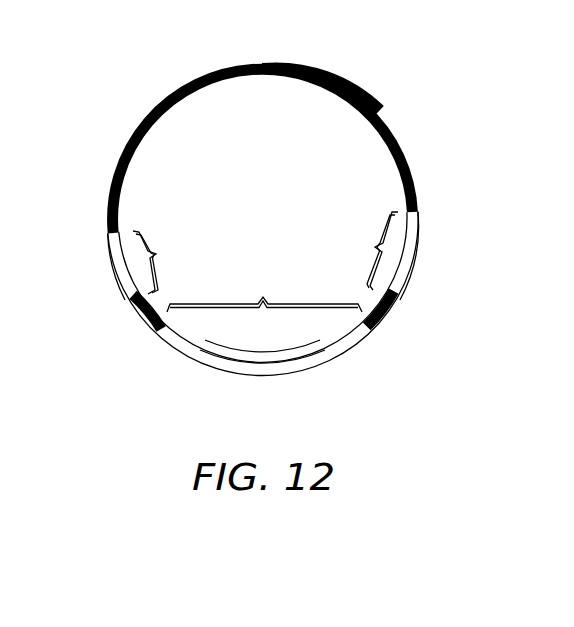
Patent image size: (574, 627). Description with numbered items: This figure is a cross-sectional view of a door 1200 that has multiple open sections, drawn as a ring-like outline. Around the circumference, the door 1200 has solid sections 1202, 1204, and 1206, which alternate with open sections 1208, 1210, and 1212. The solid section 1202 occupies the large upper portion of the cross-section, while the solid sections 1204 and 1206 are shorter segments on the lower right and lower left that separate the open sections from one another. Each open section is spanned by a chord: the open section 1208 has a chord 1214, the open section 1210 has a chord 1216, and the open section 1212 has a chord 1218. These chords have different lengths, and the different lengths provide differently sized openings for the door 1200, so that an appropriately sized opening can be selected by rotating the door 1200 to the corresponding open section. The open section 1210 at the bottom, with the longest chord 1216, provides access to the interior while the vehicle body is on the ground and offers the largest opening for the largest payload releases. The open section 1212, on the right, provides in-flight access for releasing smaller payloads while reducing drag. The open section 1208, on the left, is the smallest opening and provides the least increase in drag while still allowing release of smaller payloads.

The door 1200 is at (214, 72).
The solid section 1202 is at (373, 71).
The solid section 1204 is at (385, 317).
The solid section 1206 is at (142, 310).
The open section 1208 is at (118, 267).
The open section 1210 is at (266, 368).
The open section 1212 is at (414, 256).
The chord 1214 is at (173, 262).
The chord 1216 is at (264, 288).
The chord 1218 is at (356, 251).